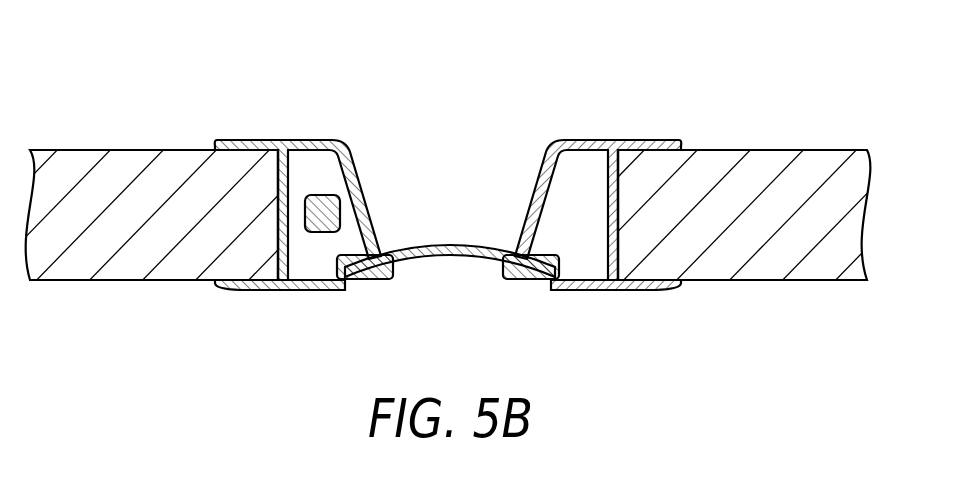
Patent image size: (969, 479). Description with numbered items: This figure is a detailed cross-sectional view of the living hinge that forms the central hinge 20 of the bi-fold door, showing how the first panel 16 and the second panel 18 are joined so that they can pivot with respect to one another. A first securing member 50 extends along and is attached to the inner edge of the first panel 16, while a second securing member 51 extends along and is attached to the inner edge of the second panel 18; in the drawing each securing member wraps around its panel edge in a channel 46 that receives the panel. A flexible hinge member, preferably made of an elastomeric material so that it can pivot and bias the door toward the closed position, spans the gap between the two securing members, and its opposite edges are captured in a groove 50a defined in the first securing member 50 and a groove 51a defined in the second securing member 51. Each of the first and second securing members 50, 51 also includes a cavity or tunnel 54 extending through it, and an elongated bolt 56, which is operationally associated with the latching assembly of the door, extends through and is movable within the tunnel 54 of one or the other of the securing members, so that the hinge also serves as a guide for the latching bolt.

The first panel 16 is at (135, 268).
The second panel 18 is at (820, 268).
The central hinge 20 is at (491, 118).
The channel 46 is at (278, 216).
The first securing member 50 is at (342, 145).
The groove 50a is at (372, 272).
The second securing member 51 is at (553, 147).
The groove 51a is at (526, 272).
The cavity or tunnel 54 is at (305, 263).
The elongated bolt 56 is at (325, 200).